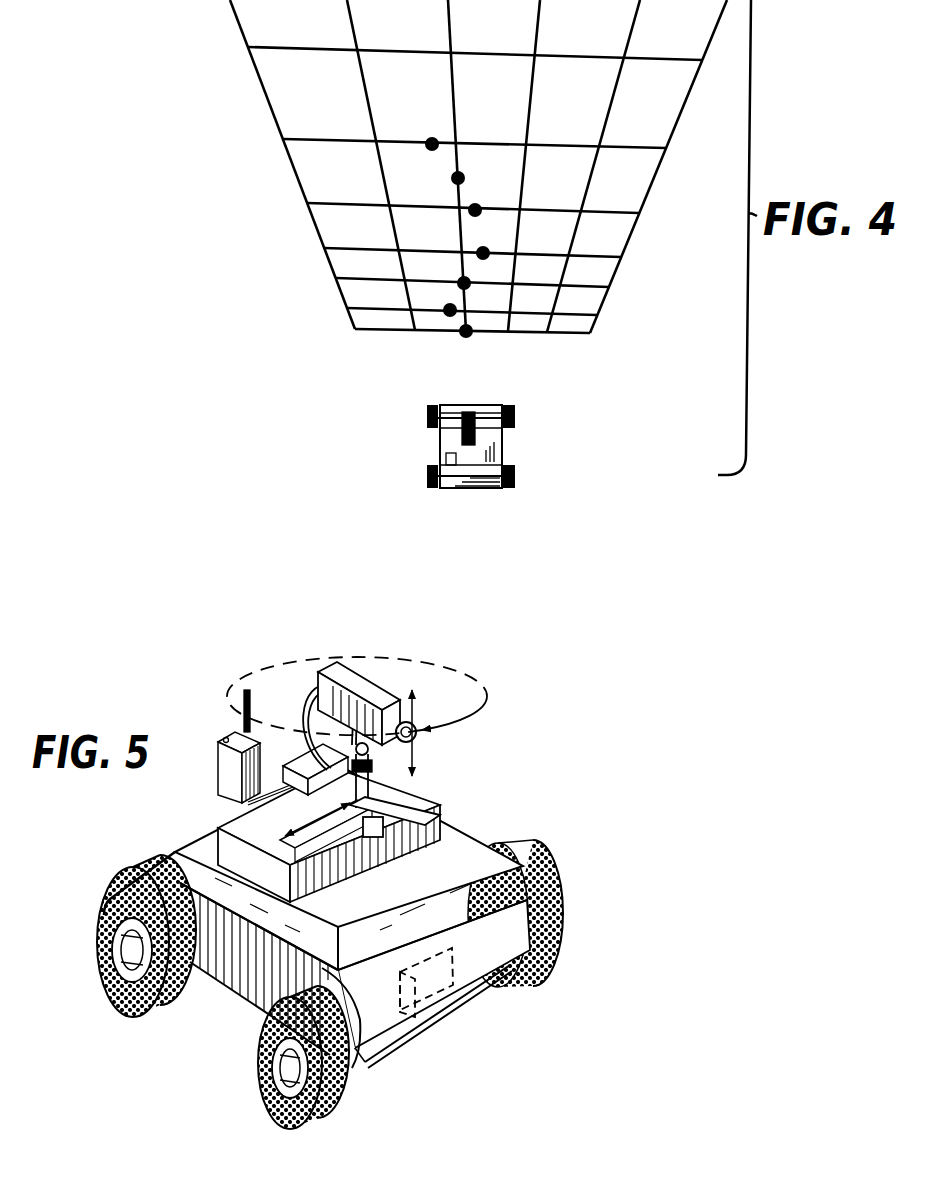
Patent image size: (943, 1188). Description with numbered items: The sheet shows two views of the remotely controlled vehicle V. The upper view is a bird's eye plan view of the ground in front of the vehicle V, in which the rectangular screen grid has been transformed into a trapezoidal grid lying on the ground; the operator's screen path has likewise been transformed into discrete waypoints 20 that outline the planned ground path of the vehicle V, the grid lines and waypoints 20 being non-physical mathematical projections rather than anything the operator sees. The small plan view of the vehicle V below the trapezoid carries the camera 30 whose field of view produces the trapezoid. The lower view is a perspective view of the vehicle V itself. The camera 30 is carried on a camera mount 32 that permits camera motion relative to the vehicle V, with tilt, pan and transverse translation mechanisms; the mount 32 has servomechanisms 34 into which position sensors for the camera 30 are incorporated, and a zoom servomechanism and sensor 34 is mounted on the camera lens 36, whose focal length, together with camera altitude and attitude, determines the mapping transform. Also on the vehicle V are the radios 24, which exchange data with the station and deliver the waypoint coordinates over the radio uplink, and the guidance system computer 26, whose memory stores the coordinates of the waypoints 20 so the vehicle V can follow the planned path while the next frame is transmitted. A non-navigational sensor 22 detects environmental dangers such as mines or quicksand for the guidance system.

In FIG. 4, the waypoints 20 is at (471, 214).
In FIG. 5, the sensor 22 is at (443, 1013).
In FIG. 5, the radios 24 is at (230, 732).
In FIG. 5, the guidance system computer 26 is at (297, 762).
In FIG. 4, the camera 30 is at (478, 405).
In FIG. 5, the camera 30 is at (382, 692).
In FIG. 5, the camera mount 32 is at (420, 765).
In FIG. 5, the servomechanisms 34 is at (372, 823).
In FIG. 5, the camera lens 36 is at (418, 732).
In FIG. 4, the vehicle V is at (502, 450).
In FIG. 5, the vehicle V is at (253, 983).